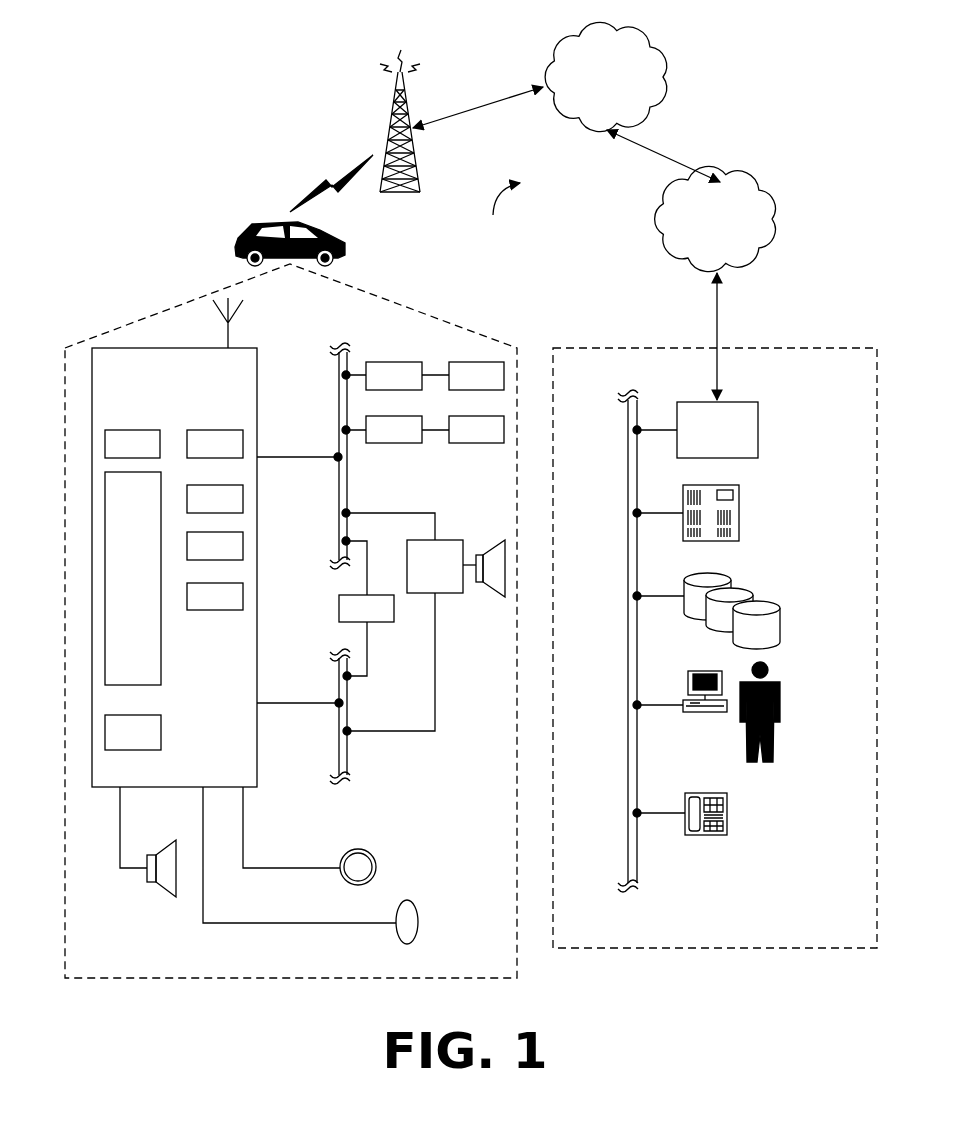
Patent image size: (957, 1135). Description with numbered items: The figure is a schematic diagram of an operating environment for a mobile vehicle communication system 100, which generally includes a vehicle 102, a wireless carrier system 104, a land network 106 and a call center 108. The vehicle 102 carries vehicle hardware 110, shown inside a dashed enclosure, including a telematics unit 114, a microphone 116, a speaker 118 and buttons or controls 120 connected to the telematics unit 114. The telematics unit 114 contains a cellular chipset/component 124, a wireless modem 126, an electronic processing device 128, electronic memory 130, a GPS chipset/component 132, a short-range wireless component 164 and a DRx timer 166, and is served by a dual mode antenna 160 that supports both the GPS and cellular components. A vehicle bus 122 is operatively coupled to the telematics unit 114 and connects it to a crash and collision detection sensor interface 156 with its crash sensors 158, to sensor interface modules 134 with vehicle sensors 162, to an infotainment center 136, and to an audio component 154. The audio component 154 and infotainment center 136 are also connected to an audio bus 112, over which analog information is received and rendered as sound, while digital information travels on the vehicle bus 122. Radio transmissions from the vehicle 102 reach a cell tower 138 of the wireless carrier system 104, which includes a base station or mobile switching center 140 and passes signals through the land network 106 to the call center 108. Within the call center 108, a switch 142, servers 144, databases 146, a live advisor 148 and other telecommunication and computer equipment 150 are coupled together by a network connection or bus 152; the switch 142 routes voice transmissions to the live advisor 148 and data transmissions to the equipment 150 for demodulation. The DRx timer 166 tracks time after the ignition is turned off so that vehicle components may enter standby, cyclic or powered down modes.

The communication system 100 is at (416, 21).
The vehicle 102 is at (242, 237).
The wireless carrier system 104 is at (497, 211).
The land network 106 is at (715, 218).
The call center 108 is at (718, 948).
The vehicle hardware 110 is at (257, 978).
The audio bus 112 is at (340, 750).
The telematics unit 114 is at (257, 645).
The microphone 116 is at (408, 900).
The speaker 118 is at (157, 890).
The buttons or controls 120 is at (355, 852).
The vehicle bus 122 is at (347, 498).
The cellular chipset/component 124 is at (132, 444).
The wireless modem 126 is at (215, 444).
The electronic processing device 128 is at (133, 578).
The electronic memory 130 is at (133, 732).
The GPS chipset/component 132 is at (215, 499).
The sensor interface modules 134 is at (394, 429).
The infotainment center 136 is at (366, 608).
The cell tower 138 is at (410, 100).
The base station or mobile switching center 140 is at (606, 76).
The switch 142 is at (717, 430).
The server 144 is at (738, 503).
The database 146 is at (780, 612).
The live advisor 148 is at (775, 682).
The telecommunication and computer equipment 150 is at (727, 807).
The call center bus 152 is at (628, 647).
The audio component 154 is at (456, 568).
The crash and/or collision detection sensor interface 156 is at (394, 376).
The crash sensors 158 is at (476, 376).
The dual mode antenna 160 is at (228, 342).
The vehicle sensors 162 is at (476, 429).
The short-range wireless component 164 is at (215, 546).
The DRx timer 166 is at (215, 596).